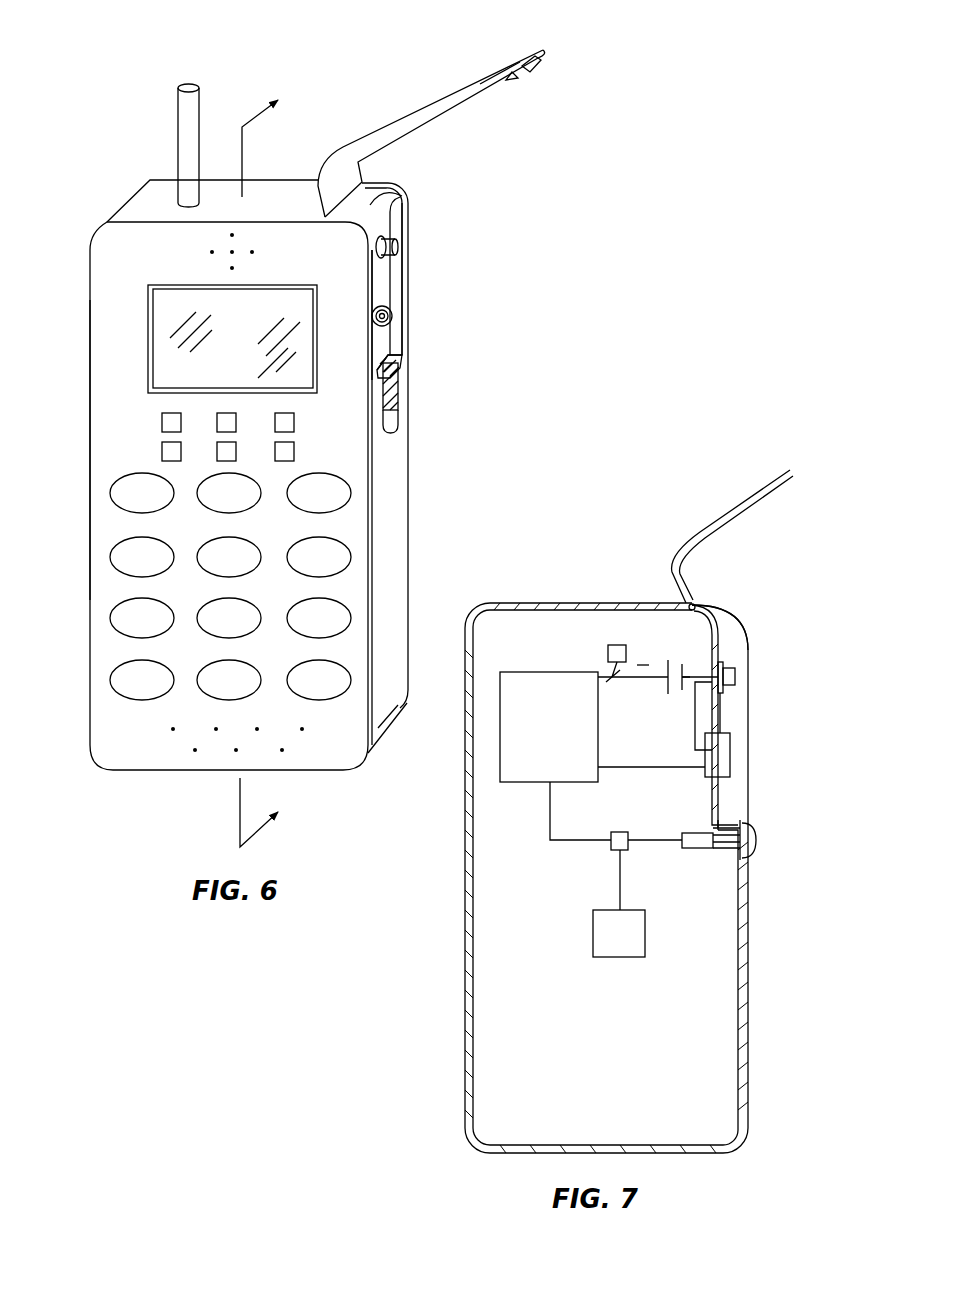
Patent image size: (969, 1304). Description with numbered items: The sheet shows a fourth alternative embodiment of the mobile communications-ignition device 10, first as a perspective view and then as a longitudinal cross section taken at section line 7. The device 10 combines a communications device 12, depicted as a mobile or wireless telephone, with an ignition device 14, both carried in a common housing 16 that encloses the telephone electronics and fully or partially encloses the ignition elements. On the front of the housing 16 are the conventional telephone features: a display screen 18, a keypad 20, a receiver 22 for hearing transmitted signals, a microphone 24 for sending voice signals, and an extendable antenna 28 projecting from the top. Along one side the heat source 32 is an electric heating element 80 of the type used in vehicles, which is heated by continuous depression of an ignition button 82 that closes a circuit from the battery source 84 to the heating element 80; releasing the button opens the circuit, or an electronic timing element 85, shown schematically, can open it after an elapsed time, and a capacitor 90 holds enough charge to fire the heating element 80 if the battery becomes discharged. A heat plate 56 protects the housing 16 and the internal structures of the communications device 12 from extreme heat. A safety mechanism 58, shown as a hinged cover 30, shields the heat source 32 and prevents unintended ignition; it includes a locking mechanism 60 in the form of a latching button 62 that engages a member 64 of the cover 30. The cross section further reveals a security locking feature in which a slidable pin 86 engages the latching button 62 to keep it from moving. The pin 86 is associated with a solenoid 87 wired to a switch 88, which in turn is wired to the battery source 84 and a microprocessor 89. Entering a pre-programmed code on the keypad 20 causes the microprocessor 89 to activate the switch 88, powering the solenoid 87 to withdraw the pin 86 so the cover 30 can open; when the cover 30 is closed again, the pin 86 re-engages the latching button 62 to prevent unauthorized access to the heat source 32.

In FIG. 6, the section line 7 is at (268, 464).
In FIG. 6, the mobile communications-ignition device 10 is at (118, 180).
In FIG. 6, the communications device 12 is at (410, 542).
In FIG. 6, the ignition device 14 is at (445, 243).
In FIG. 6, the housing 16 is at (103, 438).
In FIG. 7, the housing 16 is at (605, 604).
In FIG. 6, the display screen 18 is at (288, 290).
In FIG. 6, the keypad 20 is at (105, 541).
In FIG. 6, the receiver 22 is at (220, 257).
In FIG. 6, the microphone 24 is at (219, 753).
In FIG. 6, the antenna 28 is at (183, 112).
In FIG. 6, the cover 30 is at (430, 106).
In FIG. 7, the cover 30 is at (733, 508).
In FIG. 6, the heat source 32 is at (398, 295).
In FIG. 7, the heat source 32 is at (735, 722).
In FIG. 6, the heat plate 56 is at (375, 210).
In FIG. 7, the heat plate 56 is at (718, 640).
In FIG. 6, the safety mechanism 58 is at (470, 72).
In FIG. 6, the locking mechanism 60 is at (420, 358).
In FIG. 6, the latching button 62 is at (392, 387).
In FIG. 7, the latching button 62 is at (757, 842).
In FIG. 6, the member of the cover 64 is at (542, 60).
In FIG. 6, the electric heating element 80 is at (386, 316).
In FIG. 7, the electric heating element 80 is at (730, 755).
In FIG. 6, the ignition button 82 is at (396, 247).
In FIG. 7, the ignition button 82 is at (735, 674).
In FIG. 7, the battery source 84 is at (534, 784).
In FIG. 7, the electronic timing element 85 is at (608, 652).
In FIG. 7, the slidable pin 86 is at (725, 850).
In FIG. 7, the solenoid 87 is at (690, 832).
In FIG. 7, the switch 88 is at (620, 831).
In FIG. 7, the microprocessor 89 is at (604, 930).
In FIG. 7, the capacitor 90 is at (675, 657).